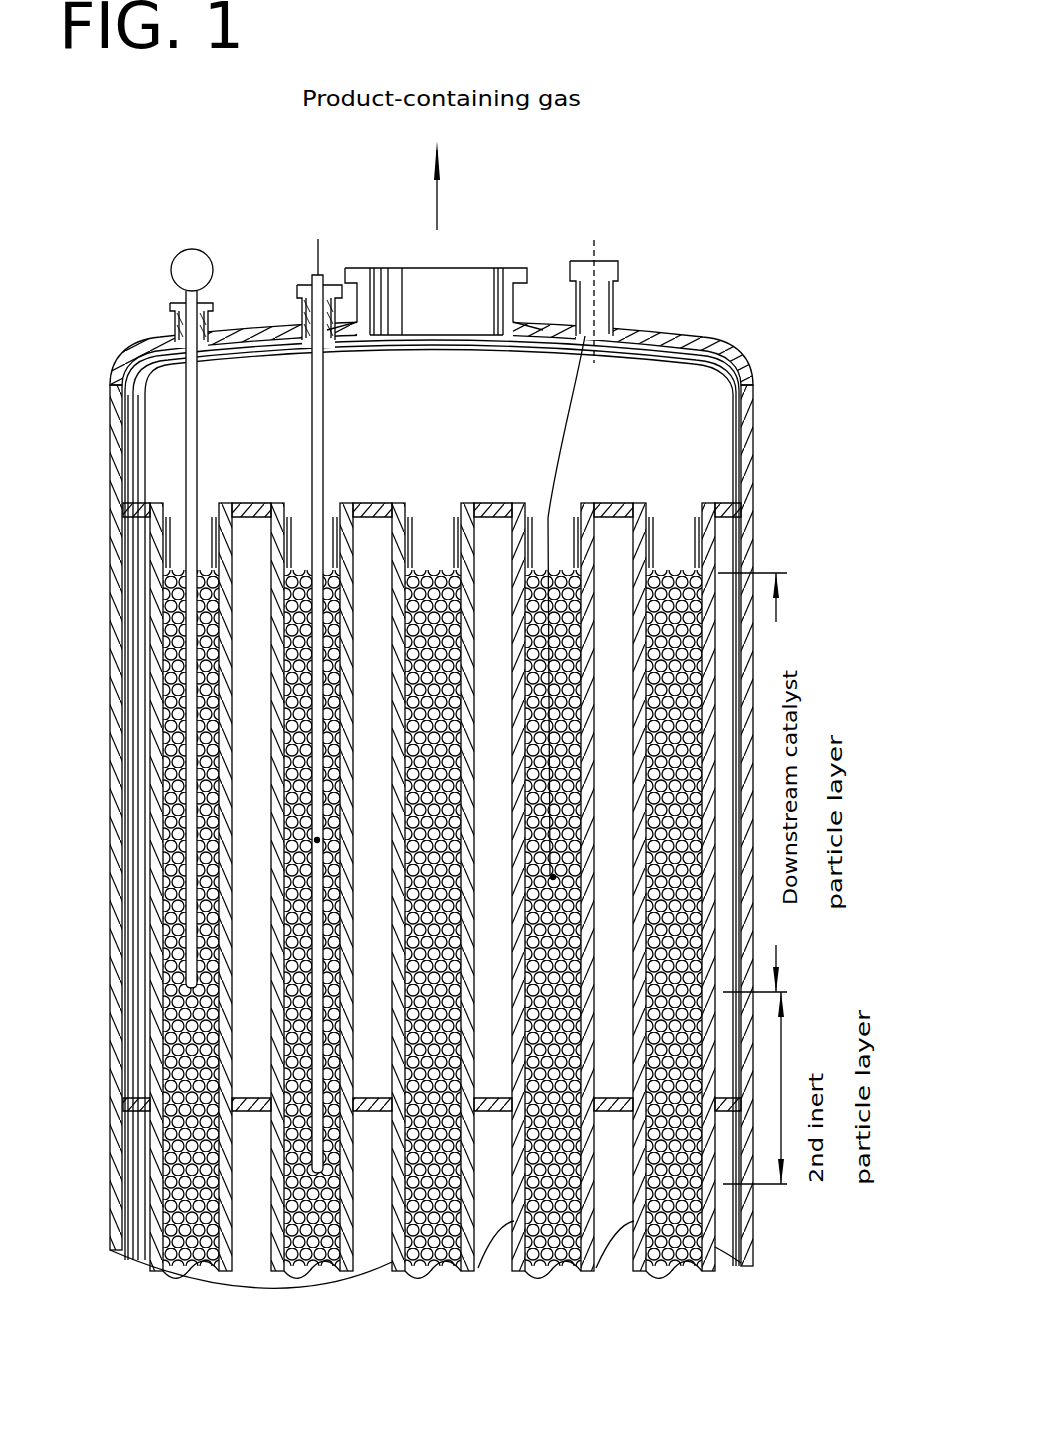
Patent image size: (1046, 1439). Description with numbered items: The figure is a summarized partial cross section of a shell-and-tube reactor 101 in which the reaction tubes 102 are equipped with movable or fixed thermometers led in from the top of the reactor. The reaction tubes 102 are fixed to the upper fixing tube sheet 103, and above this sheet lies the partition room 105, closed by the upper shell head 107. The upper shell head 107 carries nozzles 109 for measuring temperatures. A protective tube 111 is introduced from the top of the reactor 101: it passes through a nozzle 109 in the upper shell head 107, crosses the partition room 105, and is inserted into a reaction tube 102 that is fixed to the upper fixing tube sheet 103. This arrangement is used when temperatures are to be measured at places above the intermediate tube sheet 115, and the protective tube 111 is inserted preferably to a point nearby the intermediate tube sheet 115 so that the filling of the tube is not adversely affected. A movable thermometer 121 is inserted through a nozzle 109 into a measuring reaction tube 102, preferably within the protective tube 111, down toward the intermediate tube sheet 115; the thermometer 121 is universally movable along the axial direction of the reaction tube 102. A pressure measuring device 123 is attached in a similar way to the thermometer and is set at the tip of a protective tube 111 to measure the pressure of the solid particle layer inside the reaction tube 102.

The shell-and-tube reactor 101 is at (112, 664).
The reaction tubes 102 is at (280, 610).
The upper fixing tube sheet 103 is at (720, 505).
The partition room 105 is at (665, 425).
The upper shell head 107 is at (720, 358).
The nozzles 109 is at (176, 336).
The protective tube 111 is at (199, 438).
The intermediate tube sheet 115 is at (126, 1096).
The movable thermometer 121 is at (320, 840).
The pressure measuring device 123 is at (193, 249).